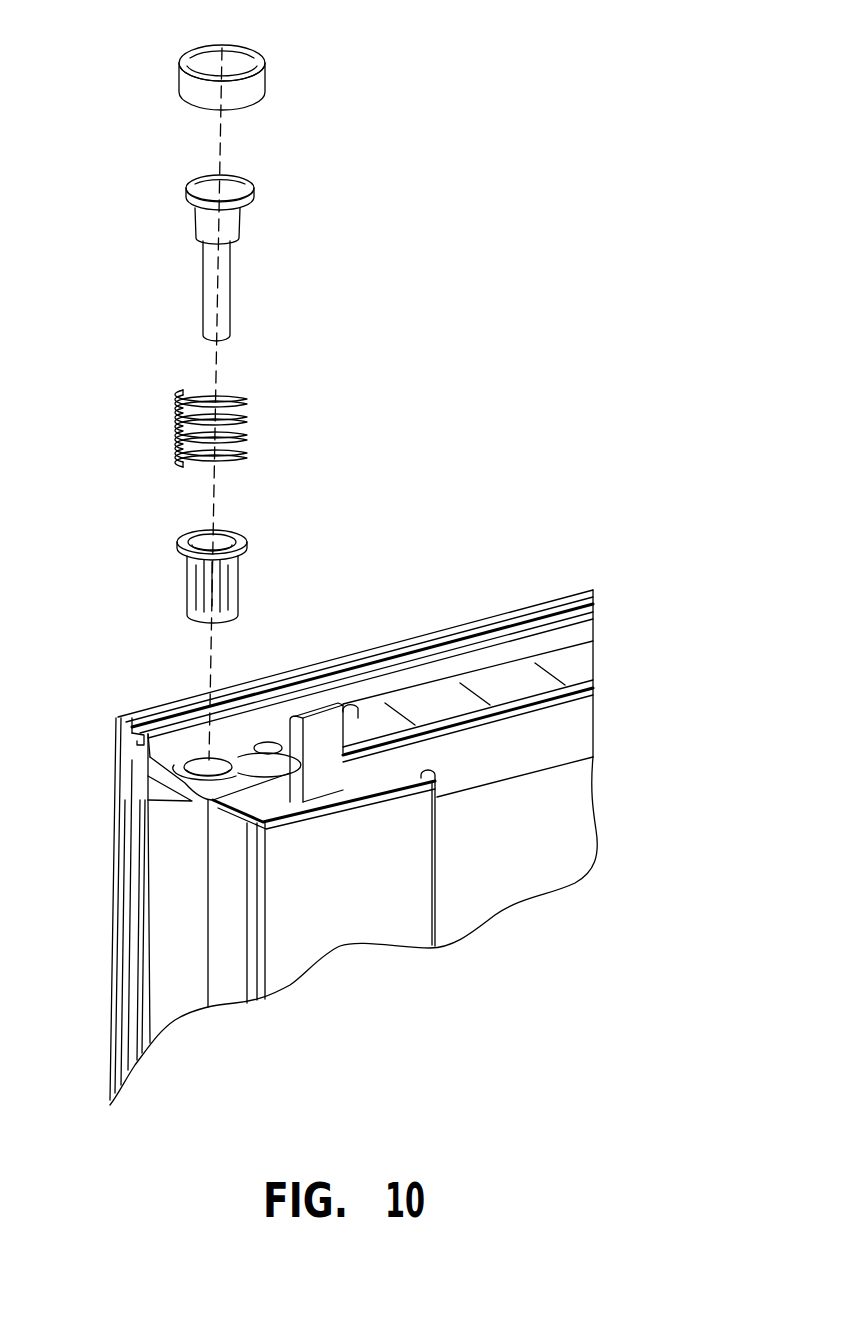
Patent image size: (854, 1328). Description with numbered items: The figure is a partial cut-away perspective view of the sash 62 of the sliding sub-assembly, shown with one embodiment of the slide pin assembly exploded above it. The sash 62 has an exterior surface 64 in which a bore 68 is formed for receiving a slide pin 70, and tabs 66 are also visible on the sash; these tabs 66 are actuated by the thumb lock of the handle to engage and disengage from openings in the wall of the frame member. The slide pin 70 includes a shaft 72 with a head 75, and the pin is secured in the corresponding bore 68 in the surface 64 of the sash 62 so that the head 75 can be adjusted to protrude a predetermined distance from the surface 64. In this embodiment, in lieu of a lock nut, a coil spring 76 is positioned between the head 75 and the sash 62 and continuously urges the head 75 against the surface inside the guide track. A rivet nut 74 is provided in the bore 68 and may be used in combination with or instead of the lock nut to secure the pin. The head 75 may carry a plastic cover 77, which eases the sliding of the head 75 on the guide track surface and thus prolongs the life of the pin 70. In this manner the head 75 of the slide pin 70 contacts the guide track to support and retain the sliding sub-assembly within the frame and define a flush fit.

The sash 62 is at (505, 607).
The exterior surface 64 is at (562, 667).
The tabs 66 is at (322, 743).
The bore 68 is at (197, 757).
The slide pin 70 is at (330, 203).
The shaft 72 is at (232, 275).
The rivet nut 74 is at (240, 568).
The head 75 is at (186, 192).
The coil spring 76 is at (182, 430).
The plastic cover 77 is at (263, 80).